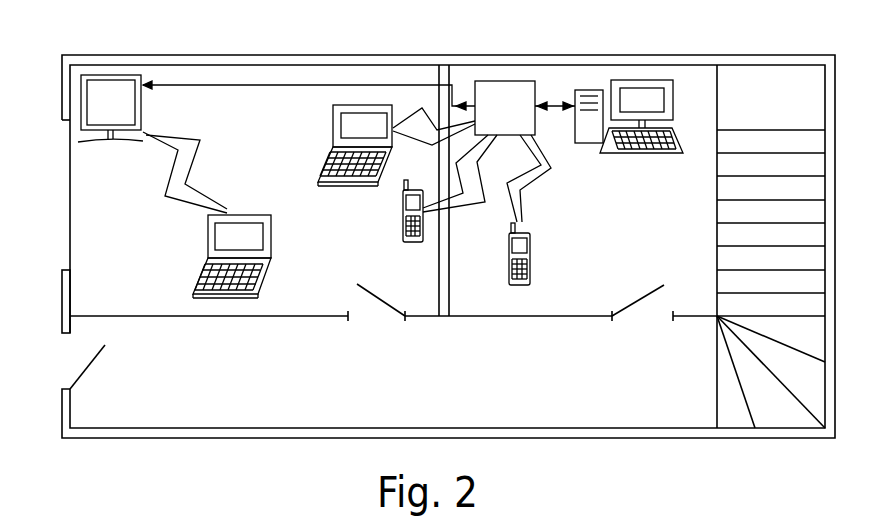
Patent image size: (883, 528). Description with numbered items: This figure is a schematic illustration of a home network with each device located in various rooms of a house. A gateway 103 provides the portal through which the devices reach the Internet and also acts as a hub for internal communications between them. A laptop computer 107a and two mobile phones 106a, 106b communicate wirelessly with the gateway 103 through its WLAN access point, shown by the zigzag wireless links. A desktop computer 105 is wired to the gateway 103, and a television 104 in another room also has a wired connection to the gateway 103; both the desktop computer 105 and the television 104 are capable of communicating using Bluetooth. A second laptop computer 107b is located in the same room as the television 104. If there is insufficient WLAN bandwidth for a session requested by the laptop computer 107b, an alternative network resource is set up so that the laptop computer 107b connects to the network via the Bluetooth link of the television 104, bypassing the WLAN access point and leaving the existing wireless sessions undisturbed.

The gateway 103 is at (505, 81).
The television 104 is at (90, 75).
The desktop computer 105 is at (656, 79).
The mobile phone 106a is at (403, 224).
The mobile phone 106b is at (531, 250).
The laptop computer 107a is at (360, 105).
The laptop computer 107b is at (206, 261).